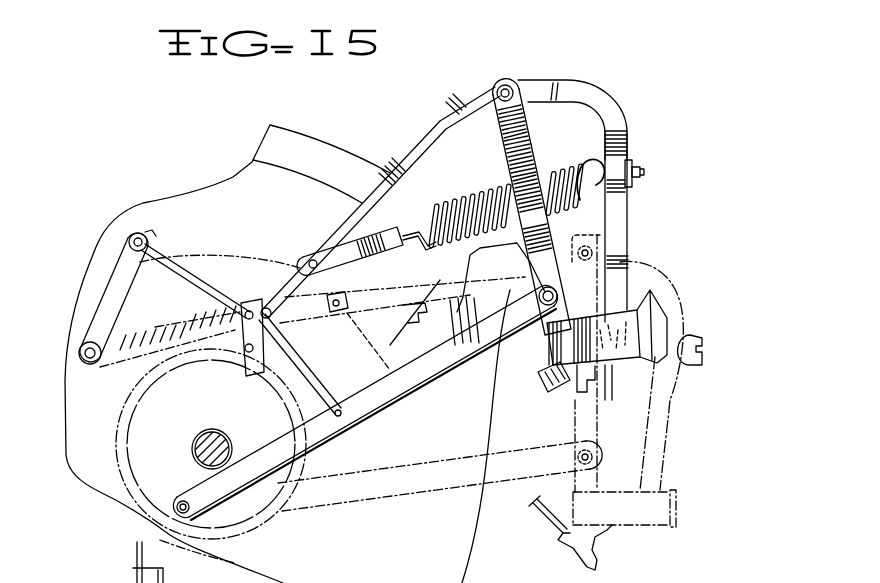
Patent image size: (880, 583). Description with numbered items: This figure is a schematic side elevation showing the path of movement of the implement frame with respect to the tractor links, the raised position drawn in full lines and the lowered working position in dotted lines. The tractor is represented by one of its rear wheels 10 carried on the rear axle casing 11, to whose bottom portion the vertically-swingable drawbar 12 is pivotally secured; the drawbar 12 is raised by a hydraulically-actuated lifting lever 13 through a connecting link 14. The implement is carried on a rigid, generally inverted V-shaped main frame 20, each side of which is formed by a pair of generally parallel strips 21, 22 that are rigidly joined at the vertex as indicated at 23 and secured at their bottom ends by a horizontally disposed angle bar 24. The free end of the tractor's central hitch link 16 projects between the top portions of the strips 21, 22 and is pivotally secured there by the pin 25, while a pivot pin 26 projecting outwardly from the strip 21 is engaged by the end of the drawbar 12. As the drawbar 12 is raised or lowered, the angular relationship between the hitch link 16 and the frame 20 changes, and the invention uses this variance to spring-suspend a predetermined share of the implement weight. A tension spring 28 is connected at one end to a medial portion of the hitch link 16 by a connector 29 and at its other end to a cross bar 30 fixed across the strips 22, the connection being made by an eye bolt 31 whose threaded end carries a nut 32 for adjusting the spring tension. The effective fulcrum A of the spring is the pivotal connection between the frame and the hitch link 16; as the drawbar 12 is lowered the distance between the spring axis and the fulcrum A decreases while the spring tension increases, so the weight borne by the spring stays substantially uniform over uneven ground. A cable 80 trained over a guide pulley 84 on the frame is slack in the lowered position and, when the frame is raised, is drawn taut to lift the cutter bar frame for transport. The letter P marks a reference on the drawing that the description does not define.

The rear wheels 10 is at (470, 543).
The rear axle casing 11 is at (270, 518).
The drawbars 12 is at (433, 366).
The lifting levers 13 is at (170, 325).
The connecting link 14 is at (220, 310).
The central hitch link 16 is at (447, 133).
The main frame 20 is at (605, 91).
The strips 21 is at (515, 150).
The strips 22 is at (622, 120).
The vertex connection 23 is at (520, 80).
The angle bars 24 is at (607, 333).
The pin 25 is at (508, 85).
The pivot pins 26 is at (545, 290).
The tension spring 28 is at (562, 163).
The connector 29 is at (333, 252).
The cross bar 30 is at (632, 160).
The eye bolt 31 is at (640, 170).
The nut 32 is at (637, 177).
The cable 80 is at (540, 375).
The guide pulley 84 is at (545, 392).
The effective fulcrum A is at (496, 86).
The plane P is at (684, 345).